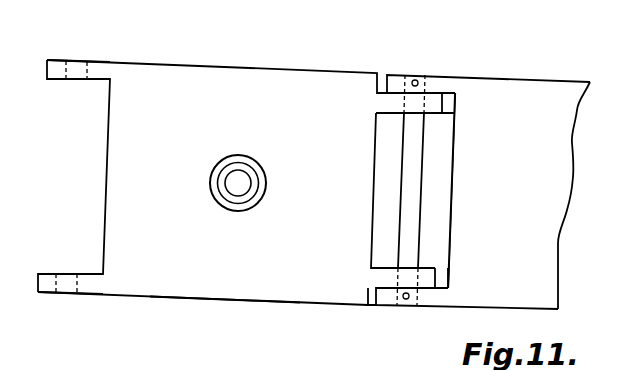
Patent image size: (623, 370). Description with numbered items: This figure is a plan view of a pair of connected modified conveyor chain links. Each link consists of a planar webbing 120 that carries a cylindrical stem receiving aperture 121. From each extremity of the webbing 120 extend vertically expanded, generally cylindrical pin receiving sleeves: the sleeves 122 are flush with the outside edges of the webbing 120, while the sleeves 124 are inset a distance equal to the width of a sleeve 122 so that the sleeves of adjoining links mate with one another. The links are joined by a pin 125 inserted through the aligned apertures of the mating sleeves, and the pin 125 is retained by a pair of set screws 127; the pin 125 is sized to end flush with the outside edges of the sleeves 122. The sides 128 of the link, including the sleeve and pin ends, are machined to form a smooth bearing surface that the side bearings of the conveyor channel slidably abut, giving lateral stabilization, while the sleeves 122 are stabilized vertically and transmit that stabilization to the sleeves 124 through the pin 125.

The planar webbing 120 is at (171, 170).
The cylindrical stem receiving aperture 121 is at (270, 136).
The pin receiving sleeves 122 is at (47, 59).
The pin receiving sleeves 124 is at (450, 110).
The pin 125 is at (410, 178).
The set screws 127 is at (417, 79).
The sides of the link 128 is at (215, 300).